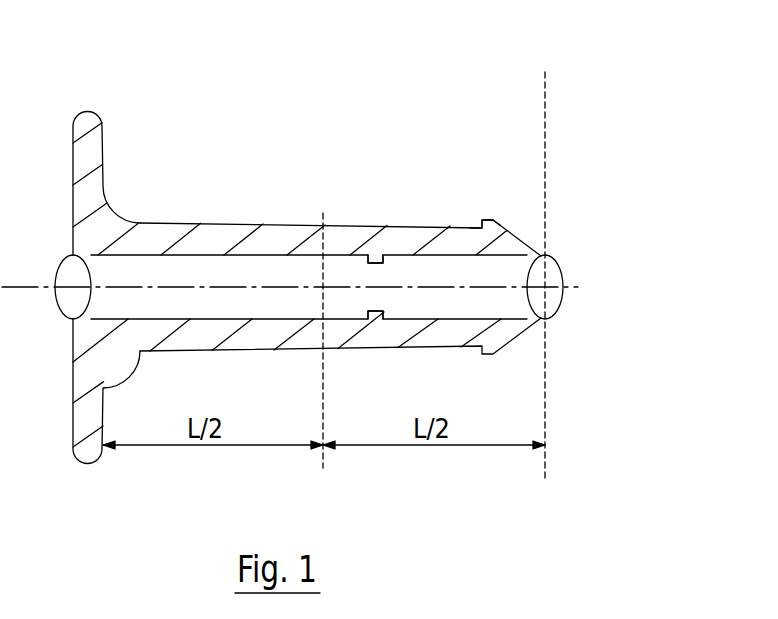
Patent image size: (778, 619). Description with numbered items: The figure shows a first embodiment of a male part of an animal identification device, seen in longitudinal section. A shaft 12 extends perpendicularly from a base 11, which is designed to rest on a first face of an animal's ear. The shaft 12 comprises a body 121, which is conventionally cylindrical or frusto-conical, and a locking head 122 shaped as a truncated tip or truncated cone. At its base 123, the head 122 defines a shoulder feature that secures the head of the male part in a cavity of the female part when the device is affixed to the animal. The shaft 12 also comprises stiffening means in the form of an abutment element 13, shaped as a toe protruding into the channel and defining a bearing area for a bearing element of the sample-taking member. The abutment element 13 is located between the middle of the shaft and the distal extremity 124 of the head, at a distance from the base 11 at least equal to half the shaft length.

The base 11 is at (70, 67).
The shaft 12 is at (361, 200).
The body 121 is at (477, 152).
The locking head 122 is at (545, 150).
The base of the head 123 is at (482, 226).
The distal extremity of the head 124 is at (563, 258).
The abutment element 13 is at (383, 263).